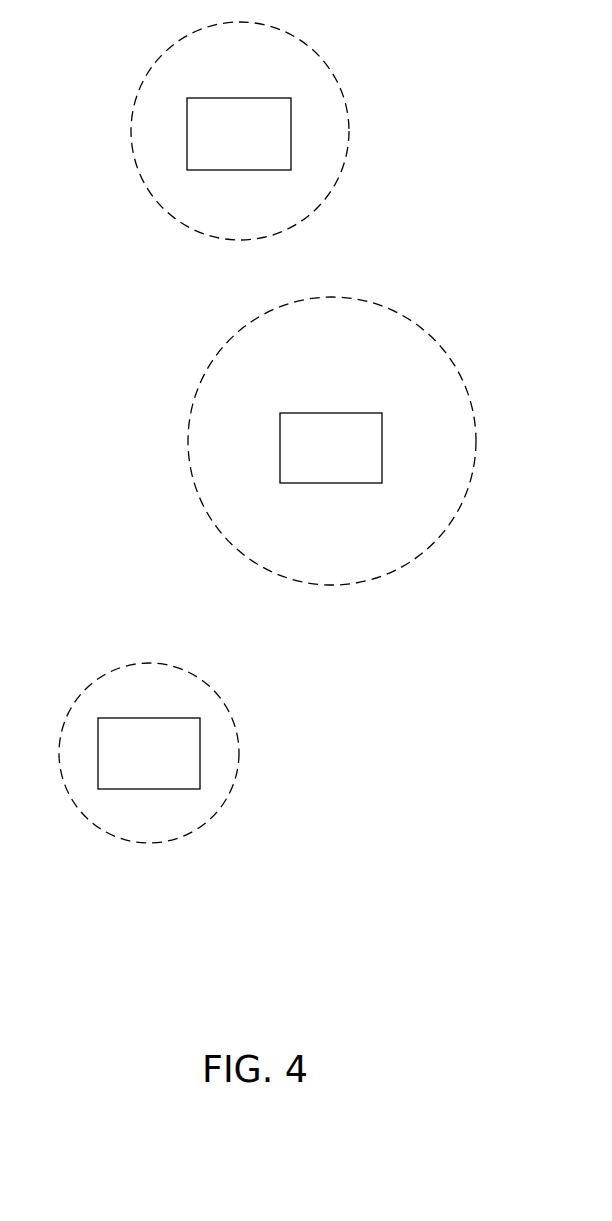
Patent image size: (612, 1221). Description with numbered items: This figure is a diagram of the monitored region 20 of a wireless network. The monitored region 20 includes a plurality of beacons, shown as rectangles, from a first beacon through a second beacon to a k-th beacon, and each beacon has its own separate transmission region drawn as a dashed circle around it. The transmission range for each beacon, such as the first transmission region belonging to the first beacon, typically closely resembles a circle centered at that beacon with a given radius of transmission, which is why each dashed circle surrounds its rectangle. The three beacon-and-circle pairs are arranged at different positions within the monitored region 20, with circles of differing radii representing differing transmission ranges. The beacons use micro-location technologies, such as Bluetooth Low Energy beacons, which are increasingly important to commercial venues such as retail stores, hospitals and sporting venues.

The monitored region 20 is at (380, 722).